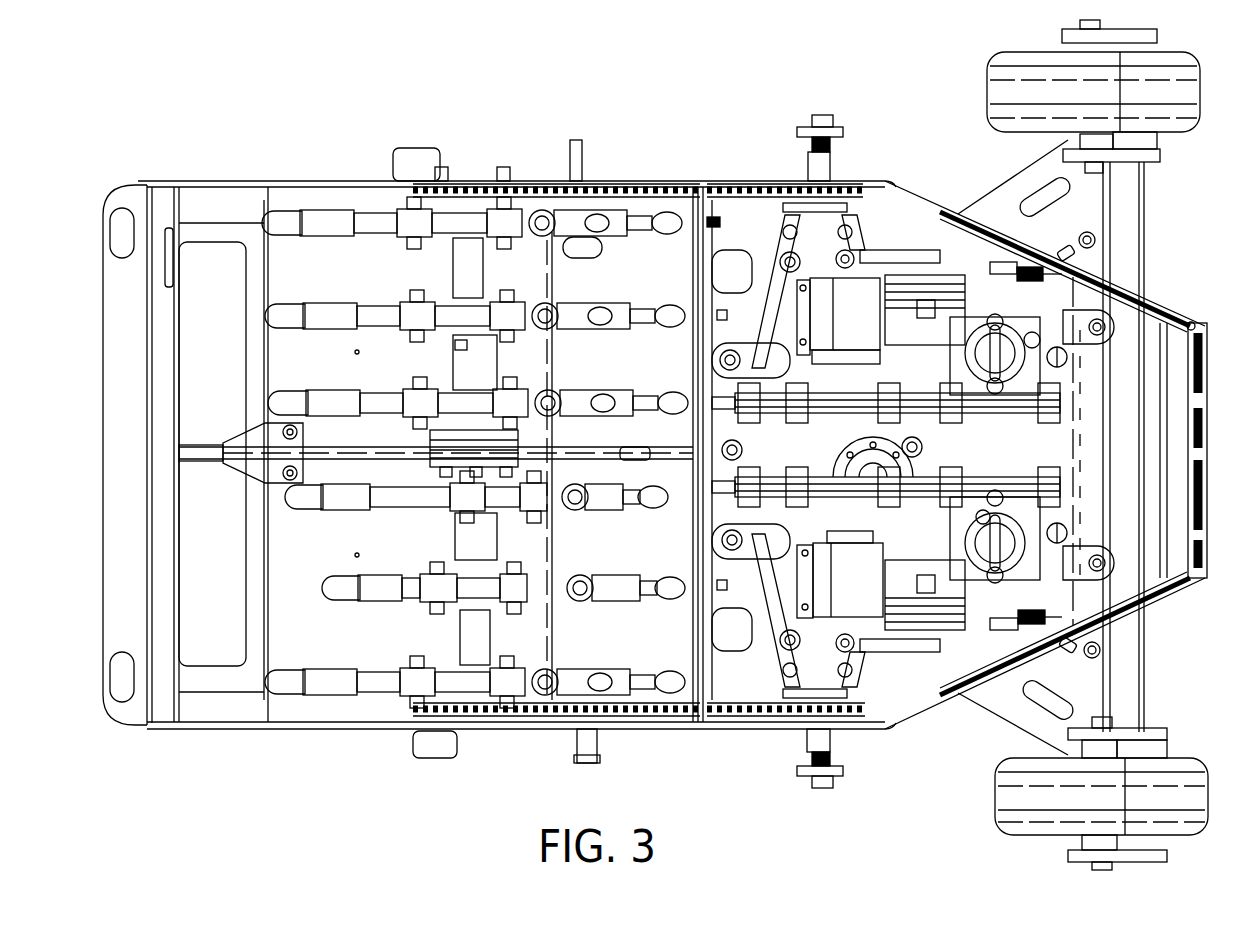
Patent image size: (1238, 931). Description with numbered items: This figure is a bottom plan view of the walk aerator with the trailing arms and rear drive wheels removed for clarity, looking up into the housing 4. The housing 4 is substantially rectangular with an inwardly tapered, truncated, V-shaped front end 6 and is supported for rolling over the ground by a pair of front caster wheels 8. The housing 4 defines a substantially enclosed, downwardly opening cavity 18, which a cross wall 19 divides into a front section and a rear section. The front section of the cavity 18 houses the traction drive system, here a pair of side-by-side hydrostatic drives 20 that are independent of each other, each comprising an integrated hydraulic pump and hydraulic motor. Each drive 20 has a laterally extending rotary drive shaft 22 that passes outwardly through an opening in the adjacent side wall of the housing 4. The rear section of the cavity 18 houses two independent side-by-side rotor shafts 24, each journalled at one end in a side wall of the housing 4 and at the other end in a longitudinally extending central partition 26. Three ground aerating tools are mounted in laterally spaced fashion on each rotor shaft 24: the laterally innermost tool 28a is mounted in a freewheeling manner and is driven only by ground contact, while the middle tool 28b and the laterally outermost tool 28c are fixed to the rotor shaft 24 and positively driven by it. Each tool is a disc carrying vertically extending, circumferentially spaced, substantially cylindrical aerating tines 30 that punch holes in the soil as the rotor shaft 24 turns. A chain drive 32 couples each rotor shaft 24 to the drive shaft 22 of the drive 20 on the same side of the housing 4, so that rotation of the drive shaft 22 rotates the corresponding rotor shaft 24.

The housing 4 is at (318, 170).
The front end 6 is at (863, 294).
The front caster wheels 8 is at (1186, 104).
The cavity 18 is at (657, 255).
The cross wall 19 is at (710, 216).
The hydrostatic drives 20 is at (862, 200).
The drive shaft 22 is at (806, 128).
The rotor shafts 24 is at (458, 270).
The central partition 26 is at (345, 455).
The laterally innermost aerating tool 28a is at (535, 505).
The middle aerating tool 28b is at (548, 600).
The laterally outermost aerating tool 28c is at (528, 697).
The aerating tines 30 is at (303, 400).
The chain drive 32 is at (607, 186).